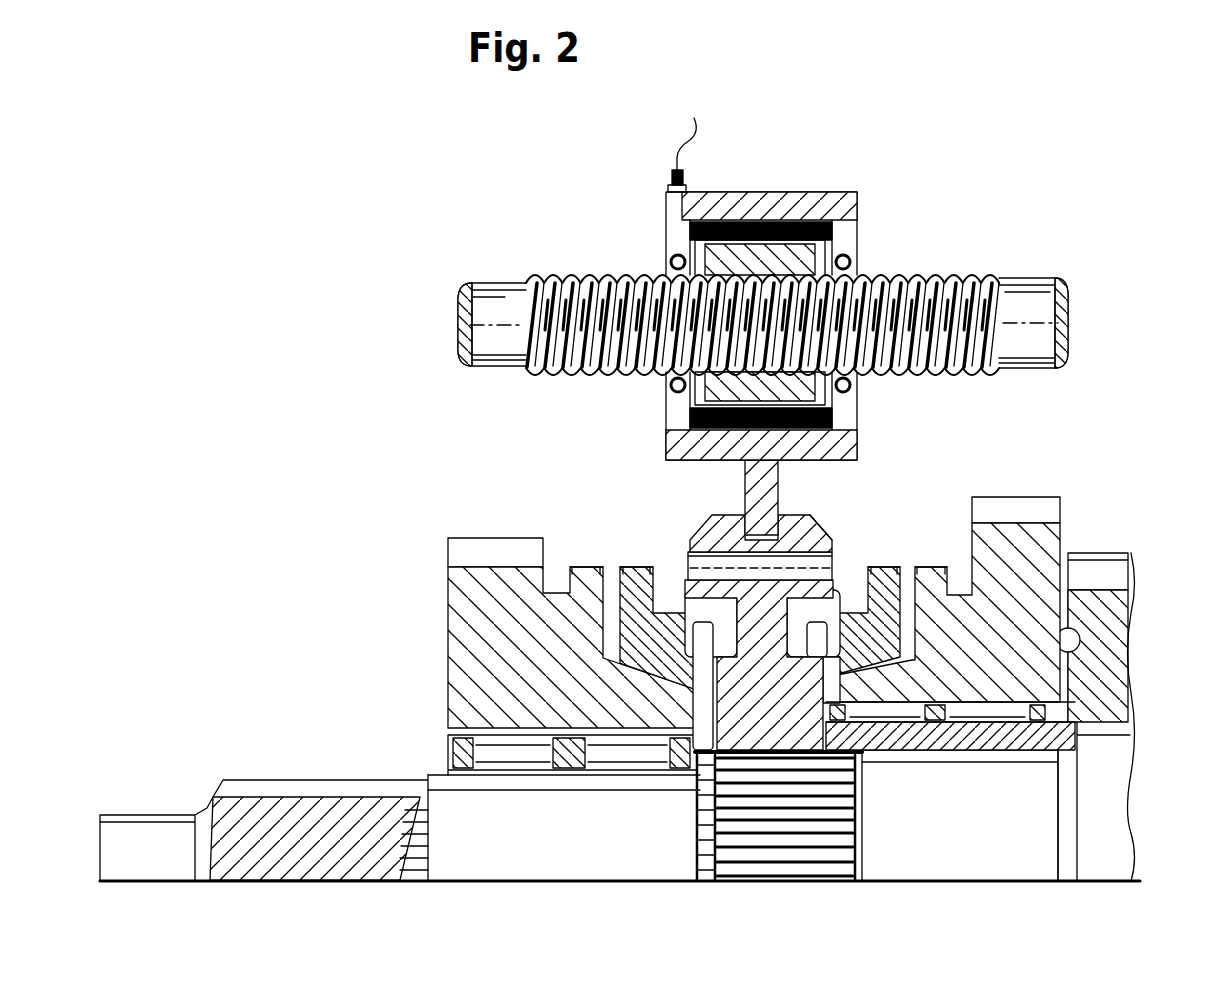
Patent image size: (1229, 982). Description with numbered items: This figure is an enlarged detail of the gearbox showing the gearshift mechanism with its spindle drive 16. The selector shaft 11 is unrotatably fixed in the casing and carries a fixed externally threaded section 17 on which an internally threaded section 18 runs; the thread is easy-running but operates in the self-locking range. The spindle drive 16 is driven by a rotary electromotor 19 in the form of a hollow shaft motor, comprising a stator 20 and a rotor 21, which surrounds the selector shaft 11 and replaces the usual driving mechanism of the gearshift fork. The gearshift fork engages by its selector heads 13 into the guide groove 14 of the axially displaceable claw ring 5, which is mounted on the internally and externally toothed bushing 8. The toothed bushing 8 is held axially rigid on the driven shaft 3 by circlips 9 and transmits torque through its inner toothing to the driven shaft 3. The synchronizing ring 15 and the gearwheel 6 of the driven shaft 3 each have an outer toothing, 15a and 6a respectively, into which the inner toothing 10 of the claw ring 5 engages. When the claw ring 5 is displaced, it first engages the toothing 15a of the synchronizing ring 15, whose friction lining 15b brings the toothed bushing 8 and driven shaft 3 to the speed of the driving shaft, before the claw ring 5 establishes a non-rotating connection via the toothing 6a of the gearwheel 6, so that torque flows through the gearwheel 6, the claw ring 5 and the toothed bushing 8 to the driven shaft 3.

The driven shaft 3 is at (1120, 815).
The claw ring 5 is at (810, 535).
The gearwheel 6 is at (485, 598).
The outer toothing 6a is at (582, 572).
The toothed bushing 8 is at (770, 710).
The circlips 9 is at (705, 775).
The inner toothing 10 is at (688, 572).
The selector shaft 11 is at (498, 298).
The selector heads 13 is at (757, 508).
The guide groove 14 is at (835, 550).
The synchronizing ring 15 is at (640, 628).
The outer toothing 15a is at (634, 572).
The friction lining 15b is at (918, 700).
The spindle drive 16 is at (780, 184).
The externally threaded section 17 is at (665, 290).
The internally threaded section 18 is at (840, 292).
The electromotor 19 is at (737, 225).
The stator 20 is at (840, 230).
The rotor 21 is at (795, 245).